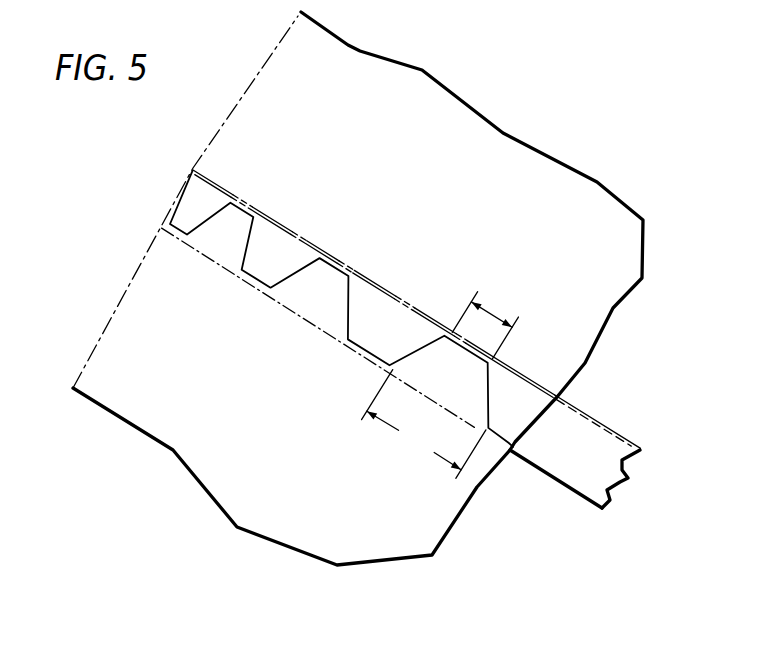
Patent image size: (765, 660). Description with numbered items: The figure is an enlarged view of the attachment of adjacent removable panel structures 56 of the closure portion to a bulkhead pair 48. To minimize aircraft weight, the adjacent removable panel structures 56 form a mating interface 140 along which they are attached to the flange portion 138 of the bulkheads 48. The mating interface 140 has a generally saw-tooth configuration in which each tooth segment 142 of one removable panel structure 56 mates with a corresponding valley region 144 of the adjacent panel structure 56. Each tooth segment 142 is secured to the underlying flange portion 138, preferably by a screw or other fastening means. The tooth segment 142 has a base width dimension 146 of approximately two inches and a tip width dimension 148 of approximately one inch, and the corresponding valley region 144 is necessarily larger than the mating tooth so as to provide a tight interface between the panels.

The bulkhead pair 48 is at (628, 452).
The removable panel structure 56 is at (400, 196).
The flange portion 138 is at (562, 462).
The mating interface 140 is at (607, 385).
The tooth segment 142 is at (310, 300).
The valley region 144 is at (350, 307).
The base width dimension 146 is at (424, 424).
The tip width dimension 148 is at (490, 313).